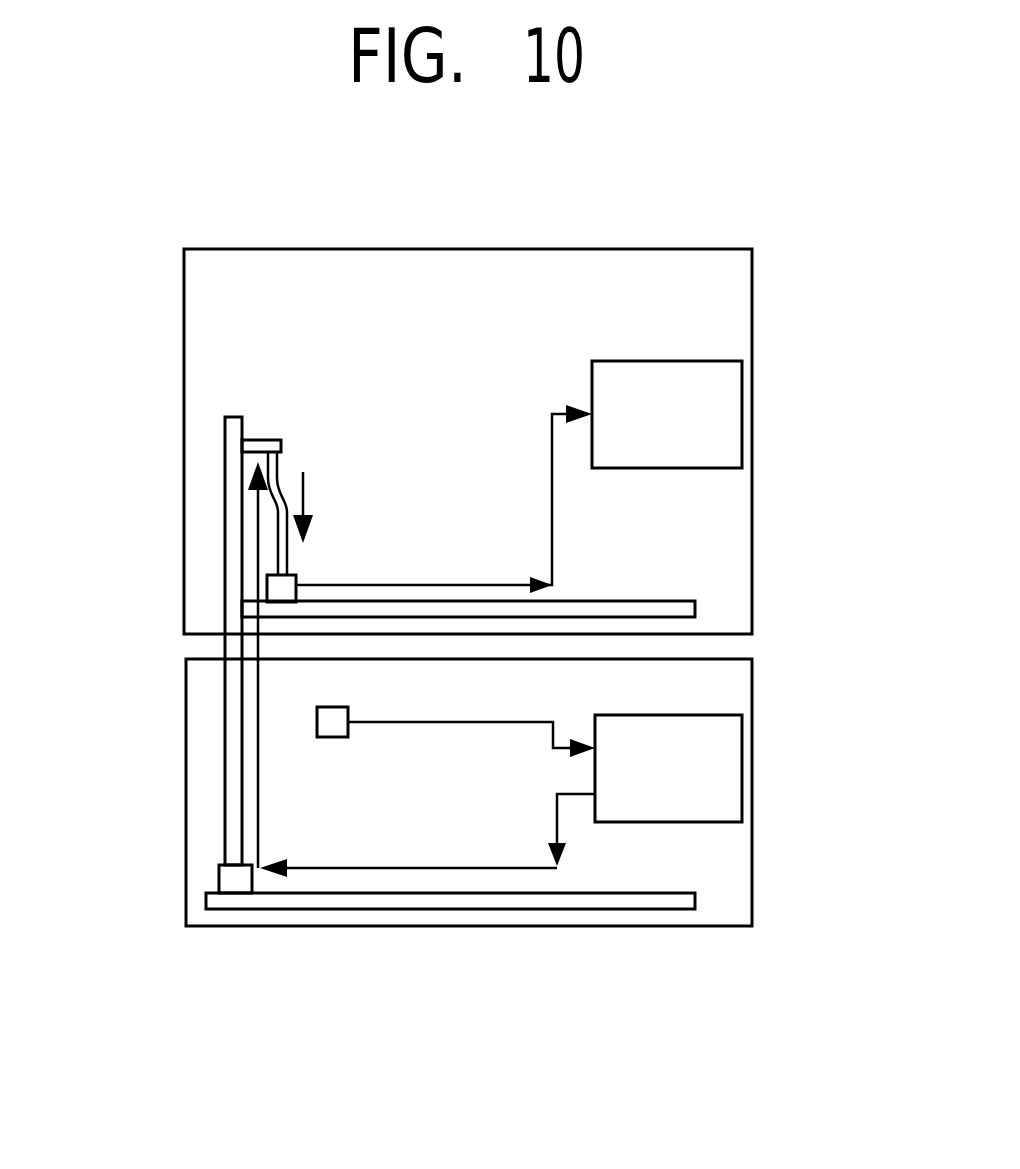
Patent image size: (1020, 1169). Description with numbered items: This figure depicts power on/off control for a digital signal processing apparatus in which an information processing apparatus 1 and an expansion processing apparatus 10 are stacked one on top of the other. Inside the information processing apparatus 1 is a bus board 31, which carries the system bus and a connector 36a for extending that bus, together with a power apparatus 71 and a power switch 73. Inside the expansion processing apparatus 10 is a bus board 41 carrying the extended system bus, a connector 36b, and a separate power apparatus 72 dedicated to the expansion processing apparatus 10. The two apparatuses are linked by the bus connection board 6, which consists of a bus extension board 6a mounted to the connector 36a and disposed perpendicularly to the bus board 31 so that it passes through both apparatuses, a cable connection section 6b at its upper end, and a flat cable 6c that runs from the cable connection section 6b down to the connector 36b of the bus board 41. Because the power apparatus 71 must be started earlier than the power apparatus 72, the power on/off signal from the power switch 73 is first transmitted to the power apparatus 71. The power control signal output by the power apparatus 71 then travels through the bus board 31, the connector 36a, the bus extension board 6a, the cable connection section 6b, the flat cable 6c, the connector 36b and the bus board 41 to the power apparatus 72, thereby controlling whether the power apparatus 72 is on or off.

The information processing apparatus 1 is at (800, 809).
The expansion processing apparatus 10 is at (790, 428).
The bus connection board 6 is at (161, 640).
The bus extension board 6a is at (240, 650).
The cable connection section 6b is at (245, 444).
The flat cable 6c is at (280, 562).
The bus board 31 is at (500, 902).
The connector 36a is at (228, 880).
The connector 36b is at (290, 580).
The bus board 41 is at (693, 605).
The power apparatus 71 is at (713, 715).
The power apparatus 72 is at (720, 361).
The power switch 73 is at (330, 738).